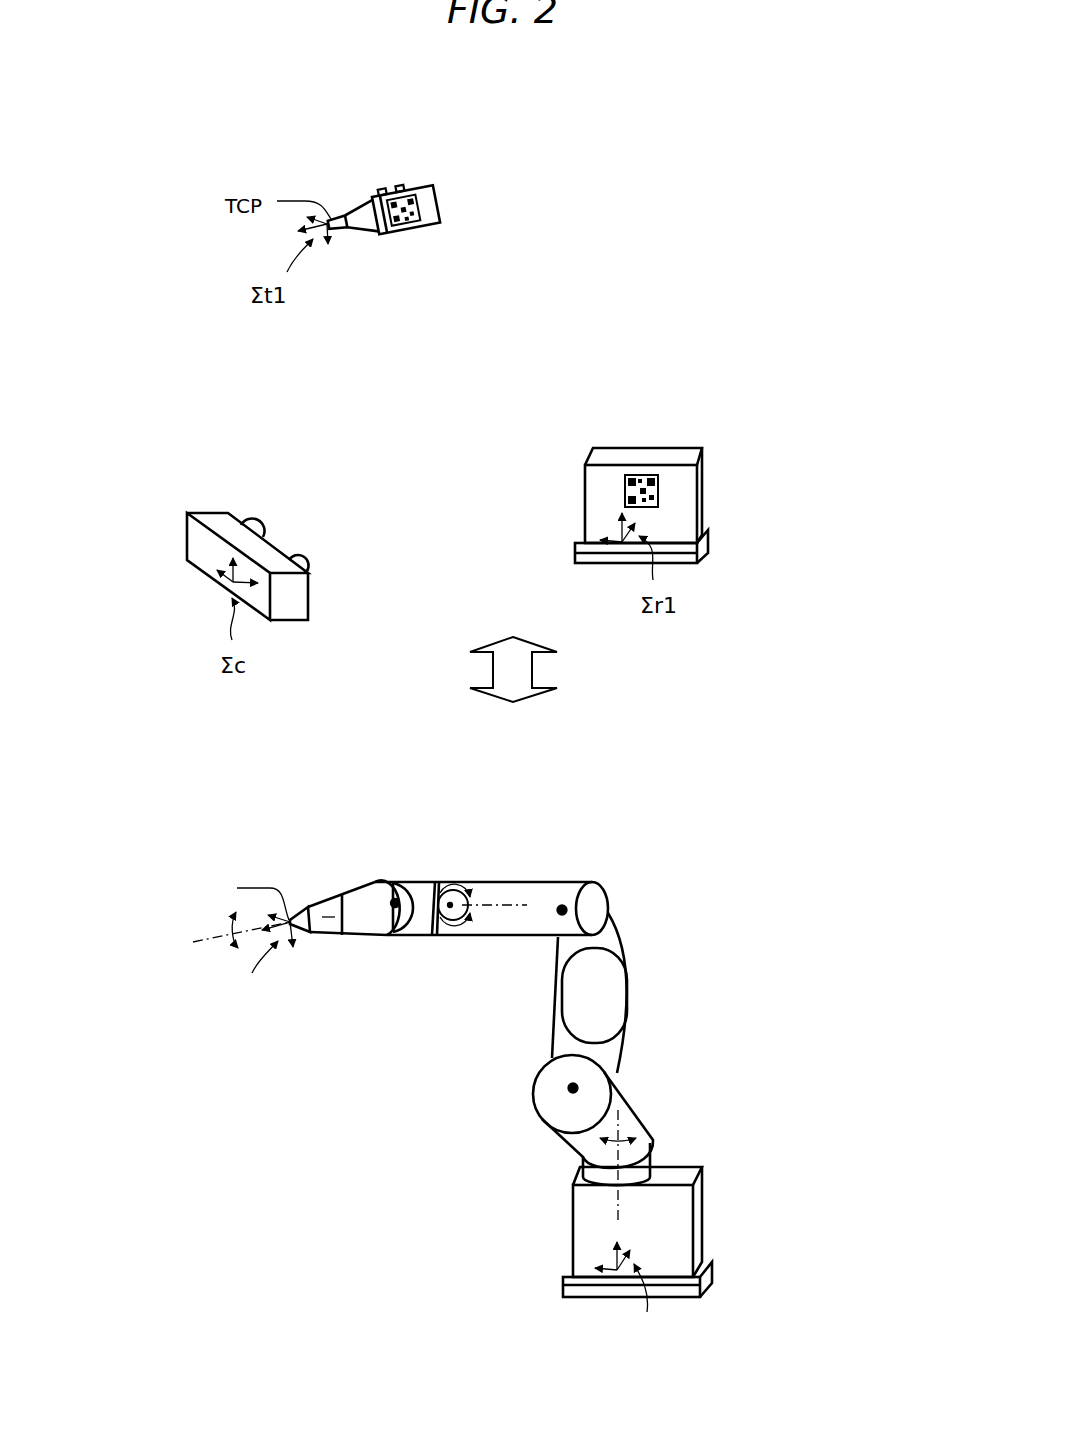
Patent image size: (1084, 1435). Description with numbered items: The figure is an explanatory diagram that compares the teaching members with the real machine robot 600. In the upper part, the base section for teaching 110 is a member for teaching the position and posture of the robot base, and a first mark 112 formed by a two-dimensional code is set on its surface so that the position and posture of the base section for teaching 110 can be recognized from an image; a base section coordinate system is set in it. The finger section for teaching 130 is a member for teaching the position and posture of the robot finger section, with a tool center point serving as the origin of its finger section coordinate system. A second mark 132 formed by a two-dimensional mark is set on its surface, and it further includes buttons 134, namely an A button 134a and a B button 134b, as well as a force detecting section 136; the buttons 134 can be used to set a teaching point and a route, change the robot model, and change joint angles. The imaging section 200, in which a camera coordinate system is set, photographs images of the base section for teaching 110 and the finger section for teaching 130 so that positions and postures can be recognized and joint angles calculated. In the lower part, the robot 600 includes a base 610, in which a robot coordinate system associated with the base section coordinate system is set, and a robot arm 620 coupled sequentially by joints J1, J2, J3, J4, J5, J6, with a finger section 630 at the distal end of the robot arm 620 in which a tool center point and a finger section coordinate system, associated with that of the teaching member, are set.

The base section for teaching 110 is at (672, 465).
The first mark 112 is at (658, 490).
The finger section for teaching 130 is at (395, 180).
The second mark 132 is at (400, 234).
The buttons 134 is at (424, 122).
The A button 134a is at (382, 186).
The B button 134b is at (400, 184).
The force detecting section 136 is at (382, 234).
The imaging section 200 is at (213, 510).
The robot 600 is at (652, 823).
The base 610 is at (702, 1193).
The robot arm 620 is at (628, 990).
The finger section 630 is at (327, 937).
The joint J1 is at (623, 1120).
The joint J2 is at (578, 1088).
The joint J3 is at (567, 909).
The joint J4 is at (447, 893).
The joint J5 is at (397, 903).
The joint J6 is at (327, 893).